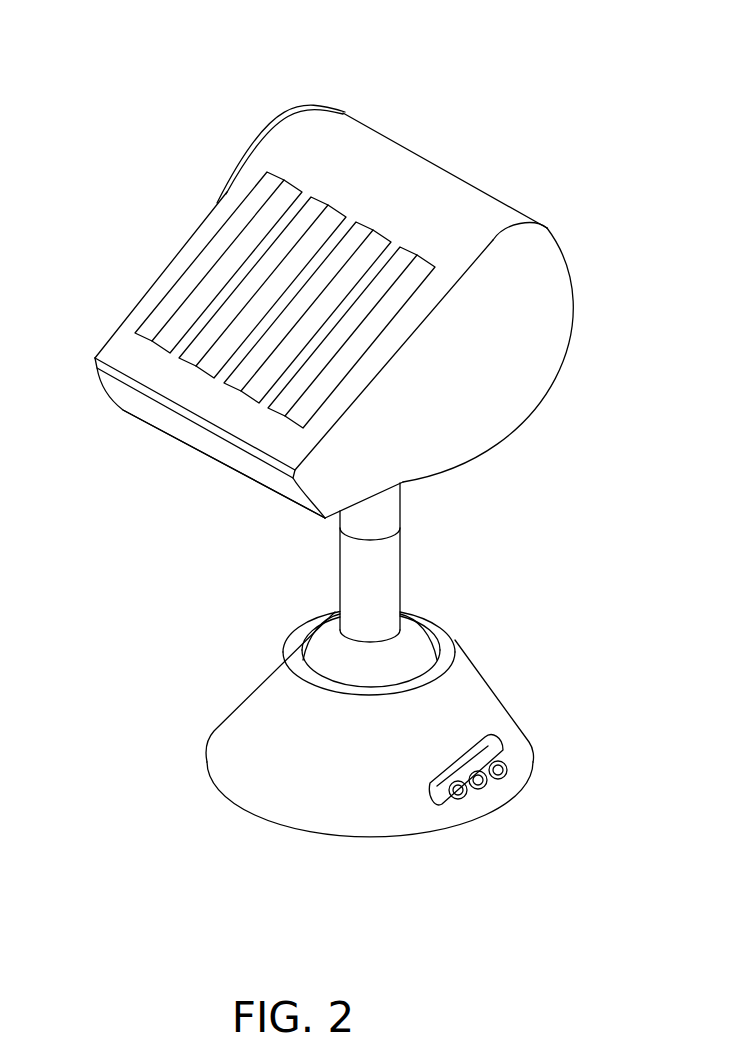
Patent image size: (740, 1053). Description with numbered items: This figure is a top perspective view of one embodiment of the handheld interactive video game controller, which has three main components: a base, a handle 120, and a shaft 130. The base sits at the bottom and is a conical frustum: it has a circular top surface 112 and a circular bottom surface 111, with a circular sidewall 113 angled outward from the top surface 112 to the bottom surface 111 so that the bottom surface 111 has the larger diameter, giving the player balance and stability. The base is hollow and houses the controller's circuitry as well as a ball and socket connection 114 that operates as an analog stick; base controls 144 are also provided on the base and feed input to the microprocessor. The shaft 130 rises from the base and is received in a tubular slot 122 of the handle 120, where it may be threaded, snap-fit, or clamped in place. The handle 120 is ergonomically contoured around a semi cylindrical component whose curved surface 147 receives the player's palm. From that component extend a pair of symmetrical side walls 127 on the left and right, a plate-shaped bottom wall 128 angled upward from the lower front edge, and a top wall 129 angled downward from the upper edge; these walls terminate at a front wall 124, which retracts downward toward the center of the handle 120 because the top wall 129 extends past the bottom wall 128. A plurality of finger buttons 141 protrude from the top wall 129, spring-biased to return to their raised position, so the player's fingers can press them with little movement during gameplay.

The bottom surface 111 is at (412, 682).
The top surface 112 is at (450, 635).
The circular sidewall 113 is at (476, 692).
The ball and socket connection 114 is at (416, 608).
The handle 120 is at (352, 304).
The tubular slot 122 is at (420, 513).
The front wall 124 is at (148, 431).
The side walls 127 is at (352, 328).
The bottom wall 128 is at (265, 518).
The top wall 129 is at (396, 155).
The shaft 130 is at (323, 603).
The finger buttons 141 is at (293, 163).
The base controls 144 is at (510, 739).
The curved surface 147 is at (474, 166).